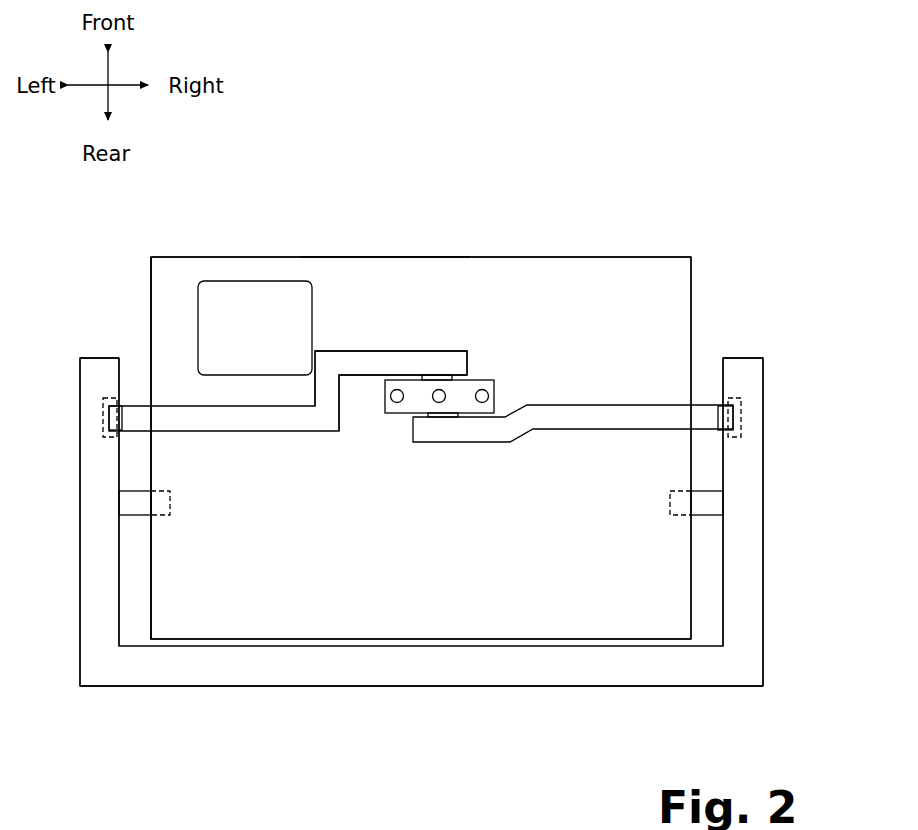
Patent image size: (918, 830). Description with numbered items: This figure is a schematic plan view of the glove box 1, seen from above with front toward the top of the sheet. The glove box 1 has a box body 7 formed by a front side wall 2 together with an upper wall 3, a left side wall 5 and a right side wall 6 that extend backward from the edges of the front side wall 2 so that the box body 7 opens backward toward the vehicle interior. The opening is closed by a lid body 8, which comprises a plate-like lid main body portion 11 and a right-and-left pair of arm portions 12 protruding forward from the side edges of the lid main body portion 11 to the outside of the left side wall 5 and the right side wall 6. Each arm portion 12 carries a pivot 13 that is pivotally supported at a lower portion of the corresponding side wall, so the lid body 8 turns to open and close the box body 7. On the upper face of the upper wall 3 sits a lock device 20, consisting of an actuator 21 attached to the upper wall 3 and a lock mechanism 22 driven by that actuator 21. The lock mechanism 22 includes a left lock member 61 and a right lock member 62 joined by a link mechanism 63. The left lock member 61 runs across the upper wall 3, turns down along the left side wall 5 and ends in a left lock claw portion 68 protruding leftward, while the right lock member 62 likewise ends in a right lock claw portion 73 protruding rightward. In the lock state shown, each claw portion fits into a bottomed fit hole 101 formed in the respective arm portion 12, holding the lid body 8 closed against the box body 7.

The glove box 1 is at (662, 195).
The front side wall 2 is at (458, 257).
The upper wall 3 is at (381, 270).
The left side wall 5 is at (150, 298).
The right side wall 6 is at (693, 294).
The box body 7 is at (578, 254).
The lid body 8 is at (475, 687).
The lid main body portion 11 is at (333, 681).
The arm portion 12 is at (88, 610).
The pivot 13 is at (135, 517).
The lock device 20 is at (331, 285).
The actuator 21 is at (253, 278).
The lock mechanism 22 is at (327, 432).
The left lock member 61 is at (220, 432).
The right lock member 62 is at (578, 432).
The link mechanism 63 is at (496, 374).
The left lock claw portion 68 is at (110, 412).
The right lock claw portion 73 is at (732, 410).
The fit hole 101 is at (108, 437).